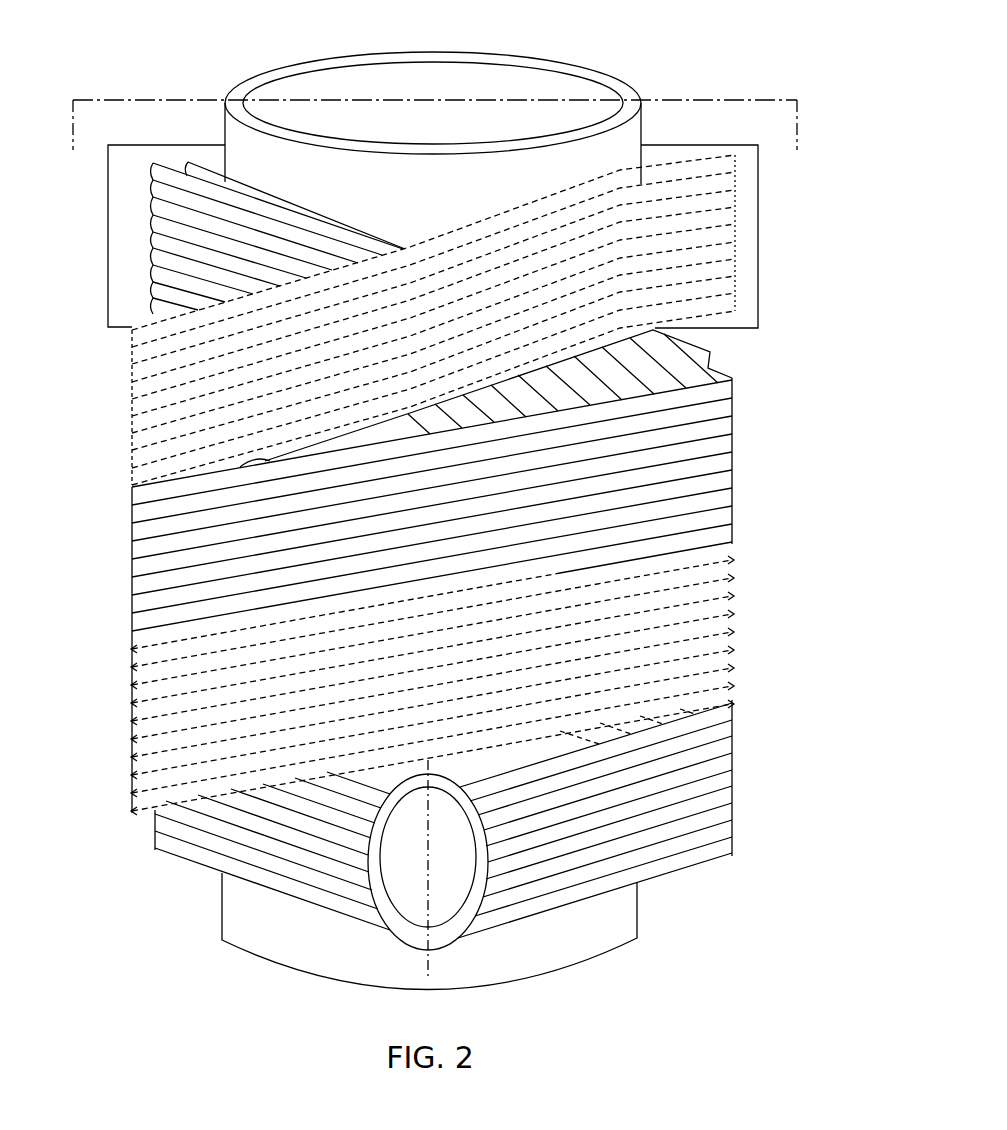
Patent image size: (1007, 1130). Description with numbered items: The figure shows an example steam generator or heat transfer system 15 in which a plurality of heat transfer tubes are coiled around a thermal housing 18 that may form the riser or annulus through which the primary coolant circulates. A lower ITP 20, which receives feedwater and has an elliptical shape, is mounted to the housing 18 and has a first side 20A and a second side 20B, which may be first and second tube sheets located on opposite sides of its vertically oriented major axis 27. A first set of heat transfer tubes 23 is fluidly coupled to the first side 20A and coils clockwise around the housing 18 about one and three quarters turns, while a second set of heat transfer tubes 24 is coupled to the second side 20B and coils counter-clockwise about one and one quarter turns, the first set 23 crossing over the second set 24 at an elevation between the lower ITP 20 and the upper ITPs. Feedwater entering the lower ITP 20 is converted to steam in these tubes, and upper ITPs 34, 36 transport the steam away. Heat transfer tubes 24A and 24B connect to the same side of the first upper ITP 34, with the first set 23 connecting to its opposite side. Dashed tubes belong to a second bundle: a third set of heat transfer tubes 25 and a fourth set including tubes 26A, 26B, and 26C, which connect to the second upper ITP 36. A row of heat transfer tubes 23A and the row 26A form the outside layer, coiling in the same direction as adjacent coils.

The heat transfer system 15 is at (172, 68).
The thermal housing 18 is at (644, 89).
The lower ITP 20 is at (457, 945).
The first side 20A is at (474, 864).
The second side 20B is at (380, 853).
The first set of heat transfer tubes 23 is at (686, 876).
The row of heat transfer tubes 23A is at (748, 372).
The second set of heat transfer tubes 24 is at (177, 866).
The heat transfer tube 24A is at (147, 158).
The heat transfer tube 24B is at (185, 158).
The third set of heat transfer tubes 25 is at (276, 457).
The row of heat transfer tubes 26A is at (732, 156).
The heat transfer tube 26B is at (692, 156).
The heat transfer tube 26C is at (658, 153).
The major axis 27 is at (428, 963).
The first upper ITP 34 is at (100, 247).
The second upper ITP 36 is at (762, 252).